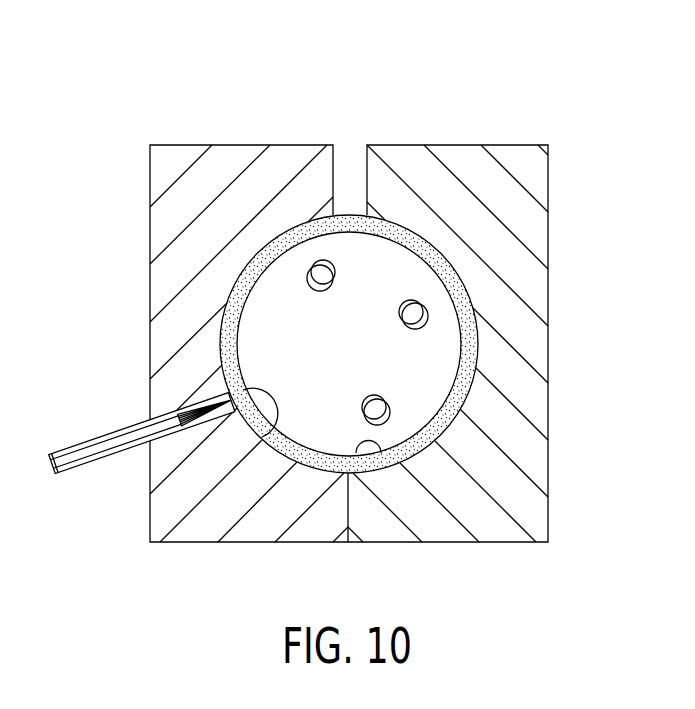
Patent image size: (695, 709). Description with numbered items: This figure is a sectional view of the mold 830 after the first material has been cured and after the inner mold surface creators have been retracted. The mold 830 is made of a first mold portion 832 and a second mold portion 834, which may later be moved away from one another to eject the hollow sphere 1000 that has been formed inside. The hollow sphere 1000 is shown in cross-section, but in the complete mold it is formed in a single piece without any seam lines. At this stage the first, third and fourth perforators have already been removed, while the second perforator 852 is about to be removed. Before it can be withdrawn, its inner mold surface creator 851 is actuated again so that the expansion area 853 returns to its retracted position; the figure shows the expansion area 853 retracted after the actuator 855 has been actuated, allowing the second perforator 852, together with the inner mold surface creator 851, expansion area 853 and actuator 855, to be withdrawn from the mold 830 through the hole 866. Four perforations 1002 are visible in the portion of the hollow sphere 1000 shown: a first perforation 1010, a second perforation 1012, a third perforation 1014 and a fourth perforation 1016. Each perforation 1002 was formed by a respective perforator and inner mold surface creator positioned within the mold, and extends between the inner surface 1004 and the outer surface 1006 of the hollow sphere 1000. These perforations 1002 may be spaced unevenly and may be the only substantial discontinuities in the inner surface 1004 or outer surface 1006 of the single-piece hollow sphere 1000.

The mold 830 is at (351, 290).
The first mold portion 832 is at (517, 160).
The second mold portion 834 is at (181, 157).
The inner mold surface creator 851 is at (134, 424).
The second perforator 852 is at (90, 470).
The expansion area 853 is at (182, 402).
The actuator 855 is at (77, 476).
The hole 866 is at (238, 340).
The hollow sphere 1000 is at (322, 460).
The perforations 1002 is at (343, 232).
The inner surface 1004 is at (381, 453).
The outer surface 1006 is at (253, 257).
The first perforation 1010 is at (315, 262).
The second perforation 1012 is at (262, 440).
The third perforation 1014 is at (385, 402).
The fourth perforation 1016 is at (427, 304).